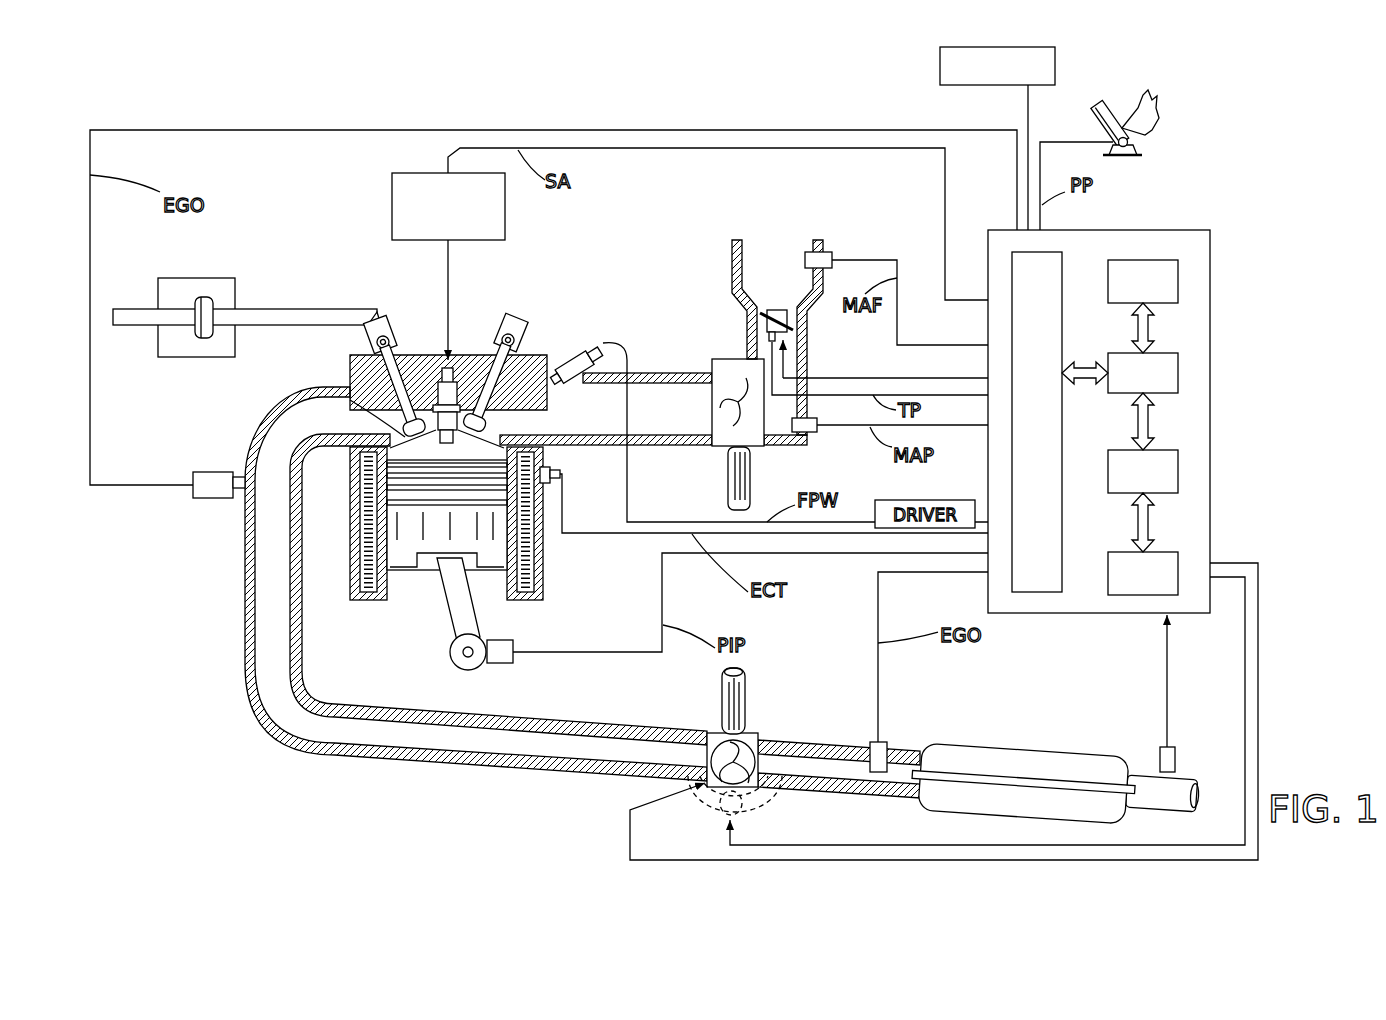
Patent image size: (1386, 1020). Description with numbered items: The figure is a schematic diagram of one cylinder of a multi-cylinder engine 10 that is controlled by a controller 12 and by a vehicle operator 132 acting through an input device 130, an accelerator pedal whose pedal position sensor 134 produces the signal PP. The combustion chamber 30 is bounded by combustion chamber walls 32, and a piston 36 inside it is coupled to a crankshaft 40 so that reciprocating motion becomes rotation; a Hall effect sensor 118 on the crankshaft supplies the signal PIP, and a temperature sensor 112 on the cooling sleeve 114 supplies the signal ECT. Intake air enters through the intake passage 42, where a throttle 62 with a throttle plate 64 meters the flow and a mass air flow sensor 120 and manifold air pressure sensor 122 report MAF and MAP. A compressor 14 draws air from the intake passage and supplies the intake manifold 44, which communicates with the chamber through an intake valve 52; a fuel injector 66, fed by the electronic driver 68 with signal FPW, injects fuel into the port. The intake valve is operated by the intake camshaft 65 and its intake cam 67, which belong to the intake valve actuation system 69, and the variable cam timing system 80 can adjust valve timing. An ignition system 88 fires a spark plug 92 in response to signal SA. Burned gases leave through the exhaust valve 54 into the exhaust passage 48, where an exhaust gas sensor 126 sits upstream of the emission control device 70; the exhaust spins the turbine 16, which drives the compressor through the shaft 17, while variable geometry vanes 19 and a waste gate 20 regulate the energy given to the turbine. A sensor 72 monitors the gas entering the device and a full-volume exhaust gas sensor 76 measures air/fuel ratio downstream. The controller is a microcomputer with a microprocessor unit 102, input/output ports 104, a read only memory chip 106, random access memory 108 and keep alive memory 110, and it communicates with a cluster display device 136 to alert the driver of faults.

The engine 10 is at (168, 108).
The controller 12 is at (1143, 409).
The compressor 14 is at (713, 362).
The turbine 16 is at (718, 732).
The shaft 17 is at (747, 718).
The variable geometry vanes 19 is at (743, 783).
The waste gate 20 is at (722, 818).
The combustion chamber 30 is at (445, 453).
The combustion chamber walls 32 is at (388, 600).
The piston 36 is at (448, 545).
The crankshaft 40 is at (455, 667).
The intake passage 42 is at (777, 337).
The intake manifold 44 is at (653, 409).
The exhaust passage 48 is at (582, 592).
The intake valve 52 is at (487, 424).
The exhaust valve 54 is at (407, 430).
The throttle 62 is at (788, 320).
The throttle plate 64 is at (755, 315).
The intake camshaft 65 is at (288, 310).
The fuel injector 66 is at (578, 346).
The intake cam 67 is at (375, 318).
The electronic driver 68 is at (627, 470).
The intake valve actuation system 69 is at (242, 245).
The emission control device 70 is at (1090, 750).
The sensor 72 is at (888, 743).
The full-volume exhaust gas sensor 76 is at (1175, 748).
The variable cam timing system 80 is at (170, 357).
The ignition system 88 is at (400, 173).
The spark plug 92 is at (458, 380).
The microprocessor unit 102 is at (1180, 372).
The input/output ports 104 is at (1064, 260).
The read only memory chip 106 is at (1180, 282).
The random access memory 108 is at (1180, 472).
The keep alive memory 110 is at (1180, 575).
The temperature sensor 112 is at (560, 478).
The cooling sleeve 114 is at (523, 552).
The Hall effect sensor 118 is at (500, 663).
The mass air flow sensor 120 is at (820, 252).
The manifold air pressure sensor 122 is at (812, 433).
The exhaust gas sensor 126 is at (193, 478).
The input device 130 is at (1105, 120).
The vehicle operator 132 is at (1157, 101).
The pedal position sensor 134 is at (1142, 142).
The cluster display device 136 is at (940, 80).